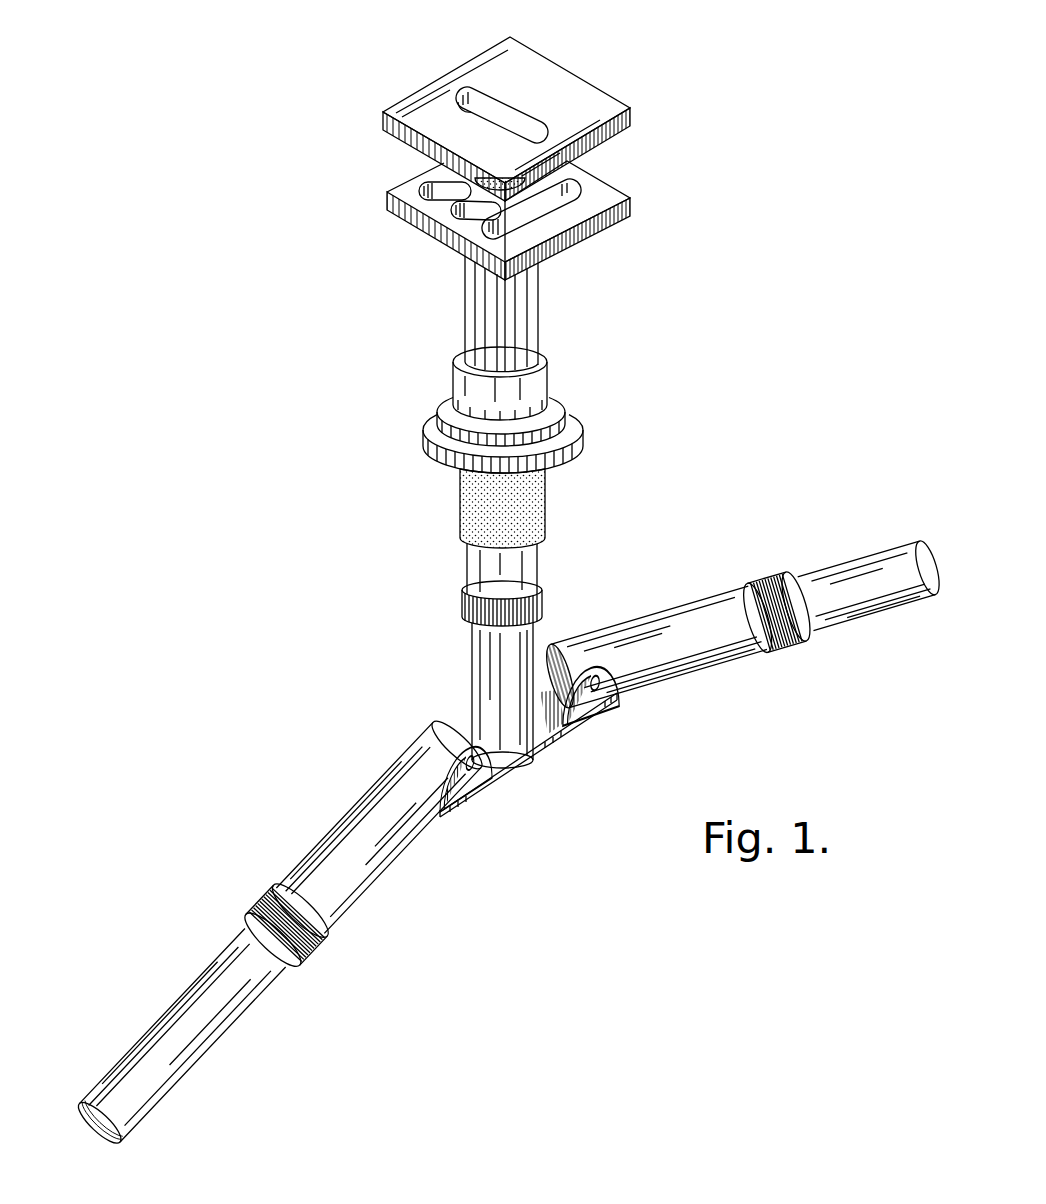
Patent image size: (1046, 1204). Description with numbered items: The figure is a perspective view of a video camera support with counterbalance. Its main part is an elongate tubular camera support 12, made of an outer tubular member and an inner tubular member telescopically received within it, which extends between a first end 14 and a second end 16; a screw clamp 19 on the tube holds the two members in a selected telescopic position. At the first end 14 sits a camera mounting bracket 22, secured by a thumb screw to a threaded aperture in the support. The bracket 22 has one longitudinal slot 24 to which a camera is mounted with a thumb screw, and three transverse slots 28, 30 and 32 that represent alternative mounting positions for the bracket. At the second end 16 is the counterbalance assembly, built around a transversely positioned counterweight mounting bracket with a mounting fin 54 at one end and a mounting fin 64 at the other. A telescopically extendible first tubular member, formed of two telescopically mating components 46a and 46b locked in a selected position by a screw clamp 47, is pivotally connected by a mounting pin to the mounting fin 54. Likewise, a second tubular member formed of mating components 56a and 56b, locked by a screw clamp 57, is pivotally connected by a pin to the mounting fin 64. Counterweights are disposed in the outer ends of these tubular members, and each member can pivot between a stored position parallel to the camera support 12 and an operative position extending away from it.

The tubular camera support 12 is at (496, 512).
The first end 14 is at (463, 265).
The second end 16 is at (527, 727).
The screw clamp 19 is at (466, 607).
The camera mounting bracket 22 is at (583, 100).
The longitudinal slot 24 is at (503, 115).
The transverse slot 28 is at (430, 162).
The transverse slot 30 is at (450, 208).
The transverse slot 32 is at (537, 210).
The telescopically mating component 46a is at (360, 862).
The telescopically mating component 46b is at (207, 1030).
The screw clamp 47 is at (258, 902).
The mounting fin 54 is at (470, 812).
The telescopically mating component 56a is at (712, 676).
The telescopically mating component 56b is at (828, 610).
The screw clamp 57 is at (765, 585).
The mounting fin 64 is at (613, 720).